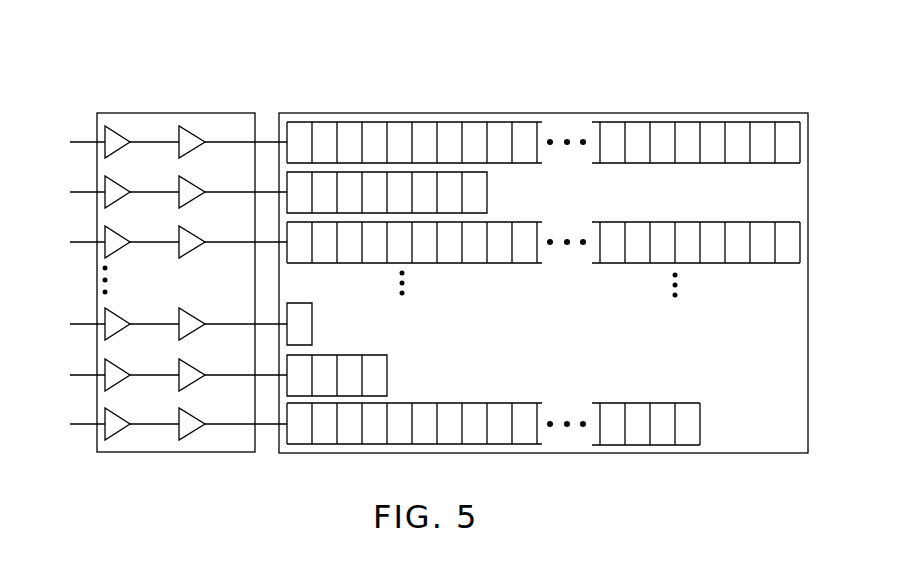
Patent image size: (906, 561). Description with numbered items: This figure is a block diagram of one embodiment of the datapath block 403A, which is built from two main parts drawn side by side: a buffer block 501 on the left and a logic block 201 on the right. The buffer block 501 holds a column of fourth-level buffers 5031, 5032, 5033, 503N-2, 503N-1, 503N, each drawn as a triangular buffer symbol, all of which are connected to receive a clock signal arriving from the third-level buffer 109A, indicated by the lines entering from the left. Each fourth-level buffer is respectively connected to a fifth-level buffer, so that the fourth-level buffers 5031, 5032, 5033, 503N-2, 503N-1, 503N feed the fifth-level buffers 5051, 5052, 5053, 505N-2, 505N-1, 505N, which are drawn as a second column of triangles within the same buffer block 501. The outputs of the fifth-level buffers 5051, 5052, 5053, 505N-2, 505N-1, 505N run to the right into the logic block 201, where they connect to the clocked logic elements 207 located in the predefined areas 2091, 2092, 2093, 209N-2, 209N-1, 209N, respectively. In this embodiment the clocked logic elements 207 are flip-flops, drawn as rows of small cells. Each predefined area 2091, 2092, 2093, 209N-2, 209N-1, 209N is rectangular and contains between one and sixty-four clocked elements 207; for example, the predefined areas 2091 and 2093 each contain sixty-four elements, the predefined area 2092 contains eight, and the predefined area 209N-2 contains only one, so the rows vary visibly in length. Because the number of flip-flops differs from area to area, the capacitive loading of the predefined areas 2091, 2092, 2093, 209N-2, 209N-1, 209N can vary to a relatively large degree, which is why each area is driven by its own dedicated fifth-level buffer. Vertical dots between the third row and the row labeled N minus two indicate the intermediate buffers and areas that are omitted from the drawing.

The datapath block 403A is at (340, 83).
The buffer block 501 is at (131, 112).
The logic block 201 is at (675, 112).
The clocked logic elements 207 is at (500, 164).
The third-level buffer 109A is at (53, 283).
The fourth-level buffer 5031 is at (120, 150).
The fourth-level buffer 5032 is at (120, 200).
The fourth-level buffer 5033 is at (120, 250).
The fourth-level buffer 503N-2 is at (138, 306).
The fourth-level buffer 503N-1 is at (138, 357).
The fourth-level buffer 503N is at (138, 406).
The fifth-level buffer 5051 is at (194, 150).
The fifth-level buffer 5052 is at (194, 200).
The fifth-level buffer 5053 is at (194, 250).
The fifth-level buffer 505N-2 is at (212, 306).
The fifth-level buffer 505N-1 is at (212, 357).
The fifth-level buffer 505N is at (212, 406).
The predefined area 2091 is at (810, 143).
The predefined area 2092 is at (810, 193).
The predefined area 2093 is at (810, 243).
The predefined area 209N-2 is at (810, 325).
The predefined area 209N-1 is at (810, 375).
The predefined area 209N is at (810, 424).